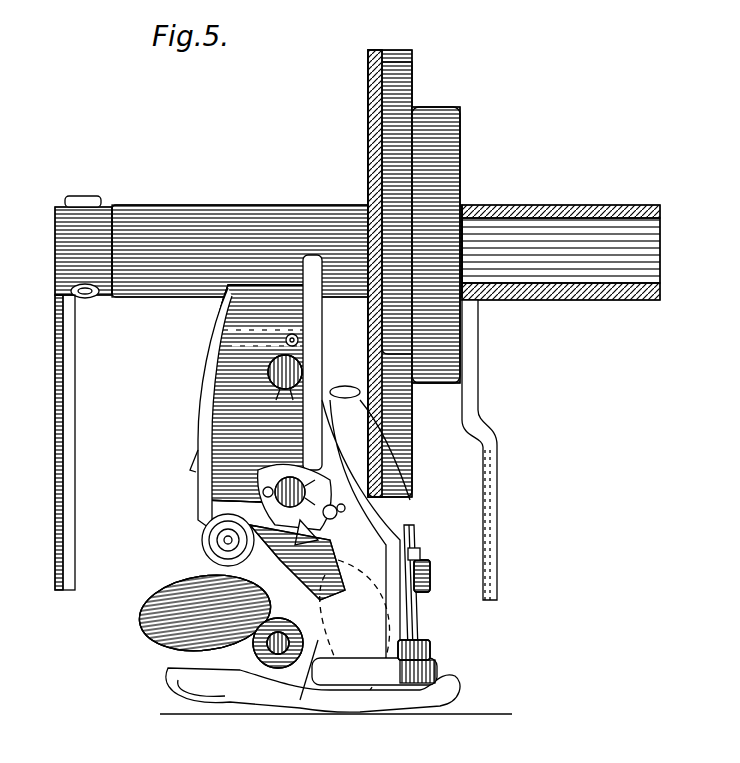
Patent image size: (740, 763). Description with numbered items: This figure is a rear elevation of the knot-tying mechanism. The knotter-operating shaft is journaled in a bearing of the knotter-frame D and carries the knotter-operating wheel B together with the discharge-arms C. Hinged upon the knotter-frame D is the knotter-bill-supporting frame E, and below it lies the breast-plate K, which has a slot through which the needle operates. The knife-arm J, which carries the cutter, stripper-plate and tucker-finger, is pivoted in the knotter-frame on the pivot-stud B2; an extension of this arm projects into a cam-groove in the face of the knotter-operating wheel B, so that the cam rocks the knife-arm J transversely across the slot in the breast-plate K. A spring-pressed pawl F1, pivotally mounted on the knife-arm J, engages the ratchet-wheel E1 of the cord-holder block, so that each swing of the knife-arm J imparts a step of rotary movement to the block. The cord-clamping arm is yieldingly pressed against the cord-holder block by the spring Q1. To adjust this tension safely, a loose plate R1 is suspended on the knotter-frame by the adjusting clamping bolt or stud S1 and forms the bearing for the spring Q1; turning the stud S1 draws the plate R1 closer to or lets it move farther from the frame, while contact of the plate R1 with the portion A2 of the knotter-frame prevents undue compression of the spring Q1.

The knotter-operating wheel B is at (418, 107).
The discharge-arms C is at (55, 405).
The pivot-stud B2 is at (245, 355).
The knife-arm J is at (198, 440).
The knotter-bill-supporting frame E is at (380, 462).
The spring-pressed pawl F1 is at (235, 592).
The knotter-frame D is at (205, 650).
The breast-plate K is at (372, 700).
The ratchet-wheel E1 is at (308, 702).
The portion of the knotter-frame A2 is at (374, 637).
The spring Q1 is at (418, 622).
The plate R1 is at (430, 650).
The adjusting clamping bolt or stud S1 is at (432, 586).